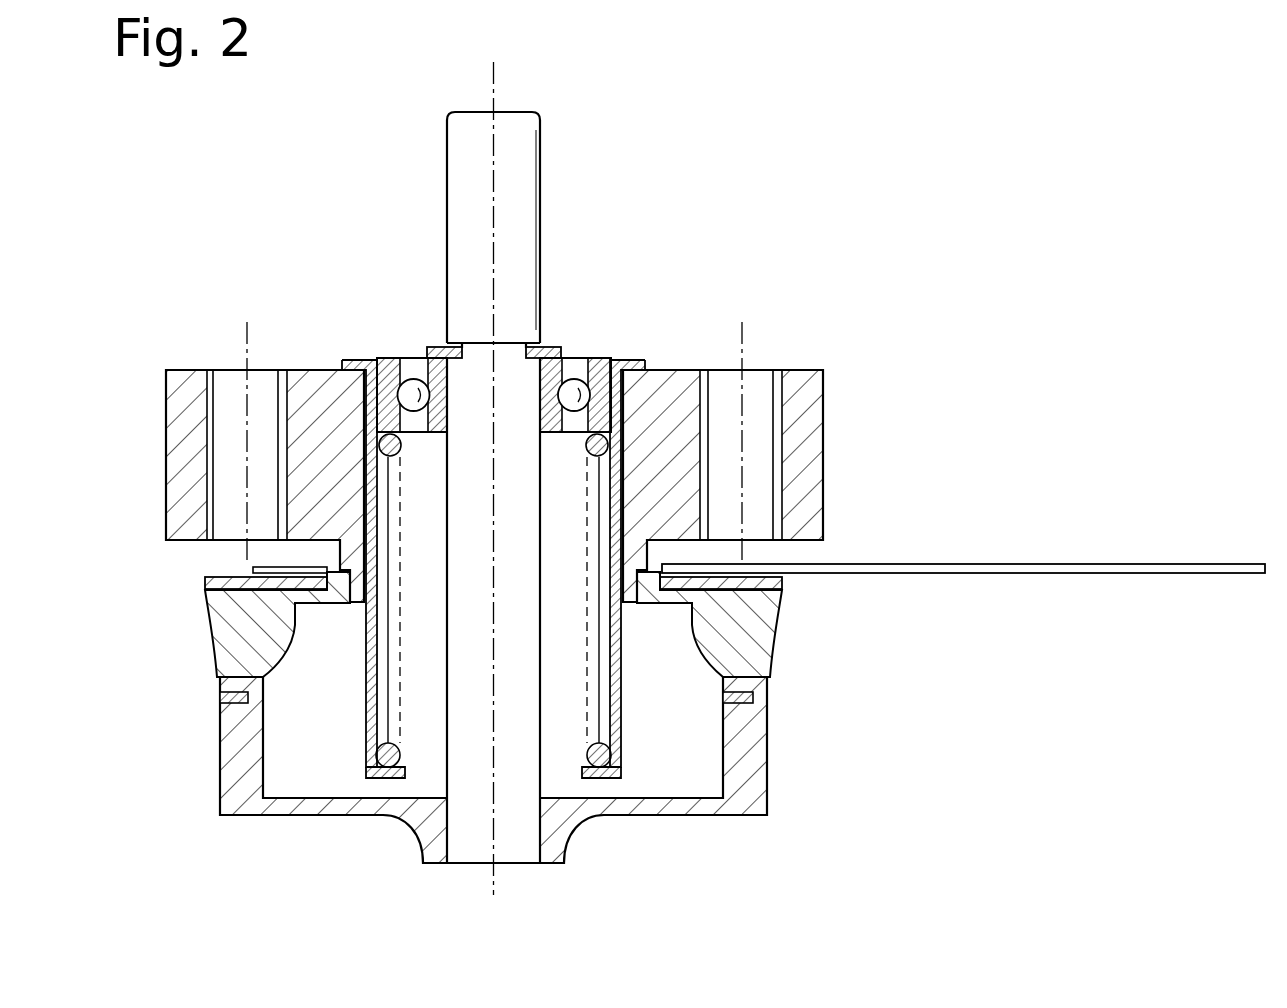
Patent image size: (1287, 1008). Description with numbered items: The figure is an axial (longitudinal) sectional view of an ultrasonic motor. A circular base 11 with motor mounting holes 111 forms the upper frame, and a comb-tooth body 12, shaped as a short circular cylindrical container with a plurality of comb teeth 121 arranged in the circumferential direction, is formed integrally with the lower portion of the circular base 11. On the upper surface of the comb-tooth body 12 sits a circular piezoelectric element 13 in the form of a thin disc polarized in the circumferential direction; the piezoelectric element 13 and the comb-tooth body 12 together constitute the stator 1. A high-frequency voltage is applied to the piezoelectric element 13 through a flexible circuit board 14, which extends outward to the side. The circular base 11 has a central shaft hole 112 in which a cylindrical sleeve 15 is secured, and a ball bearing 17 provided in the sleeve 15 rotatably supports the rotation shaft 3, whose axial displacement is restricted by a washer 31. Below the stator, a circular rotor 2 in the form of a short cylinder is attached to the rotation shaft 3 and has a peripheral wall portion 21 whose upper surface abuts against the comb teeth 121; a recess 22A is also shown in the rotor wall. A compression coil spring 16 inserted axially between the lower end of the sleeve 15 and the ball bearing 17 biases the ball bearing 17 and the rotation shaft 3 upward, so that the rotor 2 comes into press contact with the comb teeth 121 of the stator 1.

The stator 1 is at (821, 368).
The circular base 11 is at (803, 434).
The motor mounting holes 111 is at (219, 394).
The central shaft hole 112 is at (367, 361).
The comb-tooth body 12 is at (773, 628).
The comb teeth 121 is at (762, 685).
The piezoelectric element 13 is at (786, 583).
The flexible circuit board 14 is at (945, 561).
The cylindrical sleeve 15 is at (363, 737).
The compression coil spring 16 is at (400, 733).
The ball bearing 17 is at (577, 386).
The rotor 2 is at (681, 817).
The peripheral wall portion 21 is at (760, 787).
The housing recess 22A is at (762, 699).
The rotation shaft 3 is at (522, 137).
The washer 31 is at (440, 348).